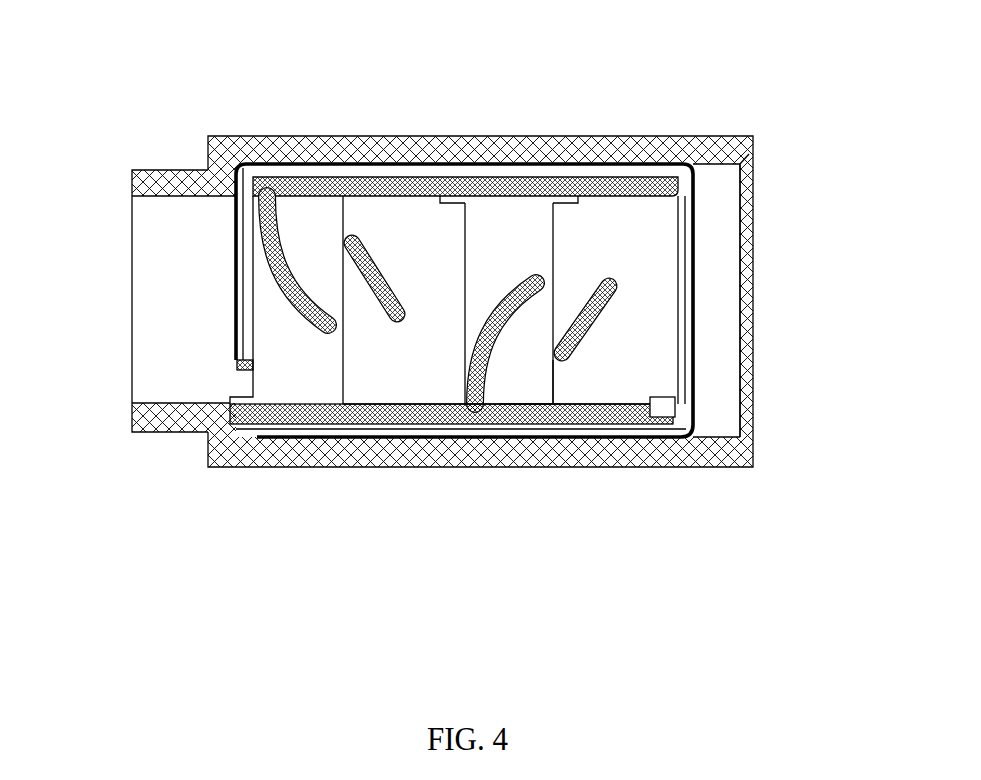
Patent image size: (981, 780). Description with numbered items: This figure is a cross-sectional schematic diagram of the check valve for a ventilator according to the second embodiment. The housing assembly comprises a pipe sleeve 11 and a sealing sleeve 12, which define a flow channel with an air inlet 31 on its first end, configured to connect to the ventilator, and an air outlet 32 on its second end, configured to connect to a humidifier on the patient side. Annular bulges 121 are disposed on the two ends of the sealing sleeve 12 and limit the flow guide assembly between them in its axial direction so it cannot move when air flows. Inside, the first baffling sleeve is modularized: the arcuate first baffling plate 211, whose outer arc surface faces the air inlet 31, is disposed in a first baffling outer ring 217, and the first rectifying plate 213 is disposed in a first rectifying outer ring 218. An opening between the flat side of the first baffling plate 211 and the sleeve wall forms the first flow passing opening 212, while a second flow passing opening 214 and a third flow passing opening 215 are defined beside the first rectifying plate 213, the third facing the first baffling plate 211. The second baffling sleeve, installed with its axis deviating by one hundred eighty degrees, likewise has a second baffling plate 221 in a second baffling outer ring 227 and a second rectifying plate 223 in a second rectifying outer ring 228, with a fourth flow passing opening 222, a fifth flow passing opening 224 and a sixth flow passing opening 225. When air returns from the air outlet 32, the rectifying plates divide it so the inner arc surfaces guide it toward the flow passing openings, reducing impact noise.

The pipe sleeve 11 is at (535, 148).
The sealing sleeve 12 is at (440, 163).
The air inlet 31 is at (183, 248).
The air outlet 32 is at (722, 258).
The annular bulges 121 is at (247, 183).
The first baffling plate 211 is at (305, 292).
The first flow passing opening 212 is at (332, 358).
The first rectifying plate 213 is at (385, 305).
The second flow passing opening 214 is at (407, 355).
The third flow passing opening 215 is at (352, 218).
The first baffling outer ring 217 is at (300, 180).
The first rectifying outer ring 218 is at (395, 417).
The second baffling plate 221 is at (510, 310).
The fourth flow passing opening 222 is at (542, 240).
The second rectifying plate 223 is at (613, 300).
The fifth flow passing opening 224 is at (613, 233).
The sixth flow passing opening 225 is at (565, 380).
The second baffling outer ring 227 is at (518, 412).
The second rectifying outer ring 228 is at (633, 430).